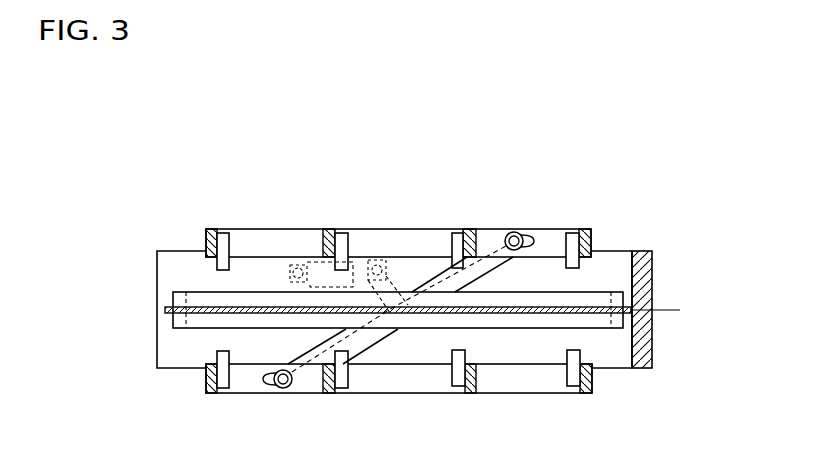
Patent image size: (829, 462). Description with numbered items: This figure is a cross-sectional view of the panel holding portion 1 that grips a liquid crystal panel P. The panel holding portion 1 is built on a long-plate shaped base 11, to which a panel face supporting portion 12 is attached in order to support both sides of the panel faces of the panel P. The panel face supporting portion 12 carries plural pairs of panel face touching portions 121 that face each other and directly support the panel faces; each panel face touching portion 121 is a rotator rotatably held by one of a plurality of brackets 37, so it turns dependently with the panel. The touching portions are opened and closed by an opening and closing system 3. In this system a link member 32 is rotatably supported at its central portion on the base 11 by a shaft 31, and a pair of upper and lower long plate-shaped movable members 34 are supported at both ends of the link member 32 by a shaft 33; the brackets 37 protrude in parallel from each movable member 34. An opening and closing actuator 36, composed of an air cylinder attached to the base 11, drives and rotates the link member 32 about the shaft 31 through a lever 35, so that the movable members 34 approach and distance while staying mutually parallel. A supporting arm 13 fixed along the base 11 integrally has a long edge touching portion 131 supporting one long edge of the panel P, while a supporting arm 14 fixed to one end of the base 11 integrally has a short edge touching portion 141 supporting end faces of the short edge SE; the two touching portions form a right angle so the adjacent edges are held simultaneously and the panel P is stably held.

The panel holding portion 1 is at (150, 212).
The opening and closing system 3 is at (347, 186).
The base 11 is at (165, 258).
The panel face supporting portion 12 is at (198, 222).
The supporting arm 13 is at (176, 326).
The long edge touching portion 131 is at (196, 327).
The supporting arm 14 is at (640, 369).
The short edge touching portion 141 is at (628, 345).
The shaft 31 is at (390, 330).
The link member 32 is at (443, 280).
The shaft 33 is at (515, 232).
The movable member 34 is at (548, 236).
The lever 35 is at (385, 278).
The opening and closing actuator 36 is at (312, 265).
The bracket 37 is at (212, 229).
The panel face touching portion 121 is at (232, 245).
The liquid crystal panel P is at (160, 311).
The short edge SE is at (672, 312).